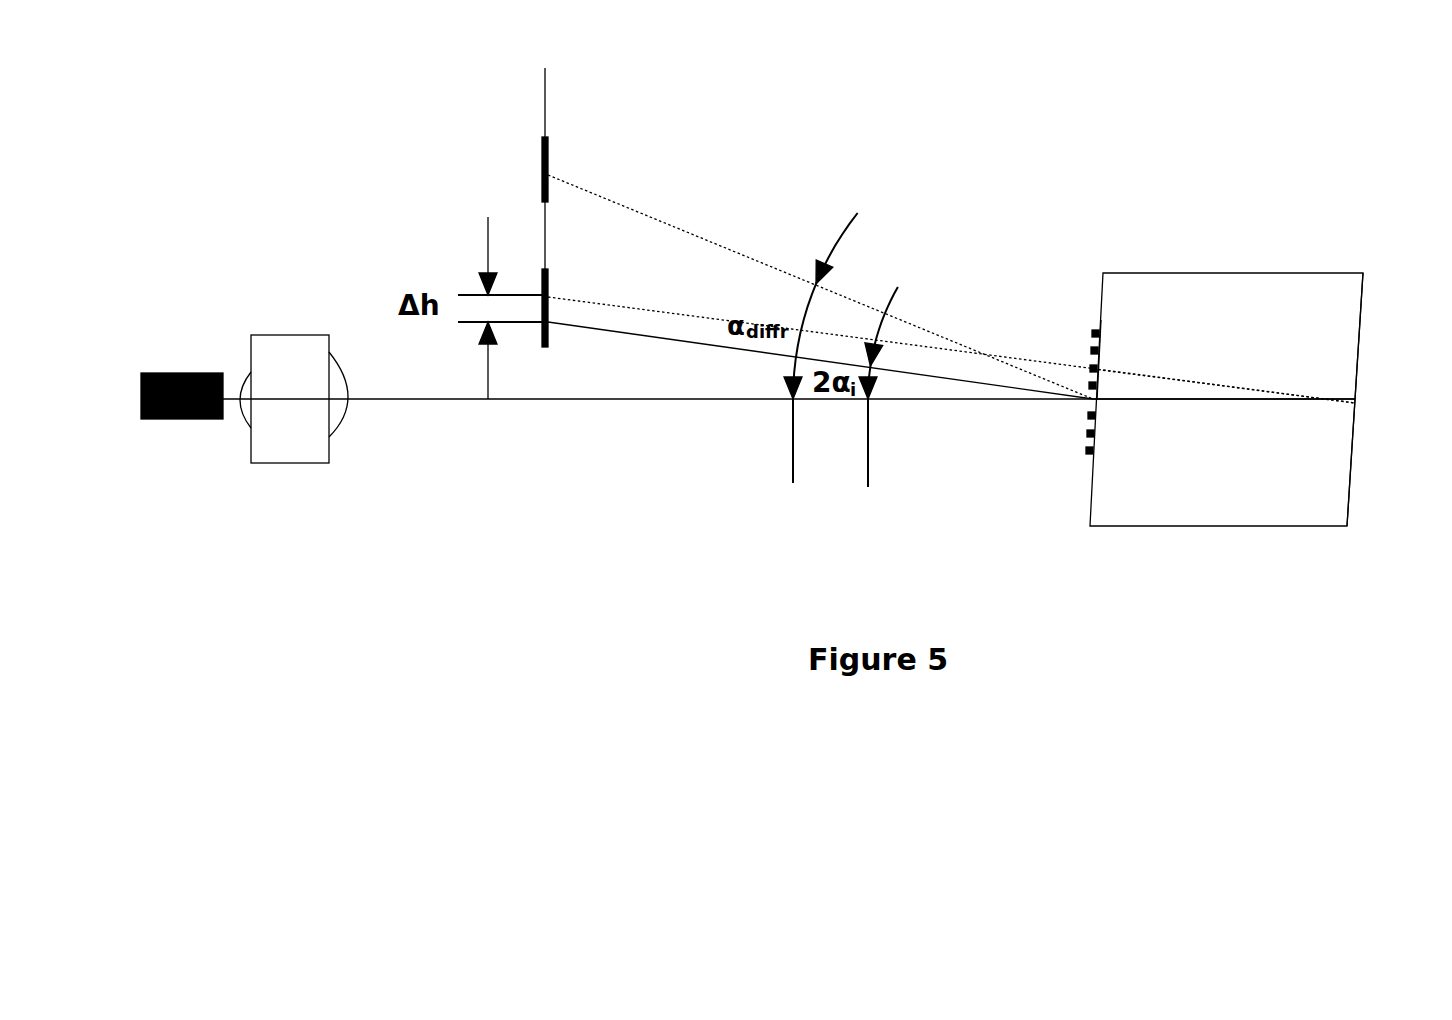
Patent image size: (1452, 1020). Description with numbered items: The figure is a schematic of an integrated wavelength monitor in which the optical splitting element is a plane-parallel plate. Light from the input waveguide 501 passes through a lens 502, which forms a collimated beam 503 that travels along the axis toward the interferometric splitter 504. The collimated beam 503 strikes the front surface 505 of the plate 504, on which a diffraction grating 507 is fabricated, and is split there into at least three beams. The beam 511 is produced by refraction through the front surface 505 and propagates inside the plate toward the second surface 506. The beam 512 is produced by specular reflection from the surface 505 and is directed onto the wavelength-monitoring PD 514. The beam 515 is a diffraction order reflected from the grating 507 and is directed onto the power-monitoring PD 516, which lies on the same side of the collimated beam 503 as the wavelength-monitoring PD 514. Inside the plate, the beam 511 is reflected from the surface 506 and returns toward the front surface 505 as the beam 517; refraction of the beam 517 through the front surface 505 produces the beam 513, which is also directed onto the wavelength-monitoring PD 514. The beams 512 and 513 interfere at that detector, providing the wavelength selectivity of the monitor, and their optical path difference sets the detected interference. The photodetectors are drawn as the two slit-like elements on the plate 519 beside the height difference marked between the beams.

The input waveguide 501 is at (180, 441).
The lens 502 is at (294, 441).
The collimated beam 503 is at (789, 464).
The interferometric splitter 504 is at (1226, 373).
The front surface 505 is at (1047, 419).
The second surface 506 is at (1395, 399).
The diffraction grating 507 is at (1081, 340).
The refracted beam 511 is at (1224, 441).
The specularly reflected beam 512 is at (820, 360).
The refracted return beam 513 is at (951, 341).
The wavelength-monitoring PD 514 is at (582, 294).
The diffracted beam 515 is at (820, 287).
The power-monitoring PD 516 is at (582, 158).
The reflected return beam 517 is at (1168, 374).
The slit mask / aperture plate 519 is at (525, 100).